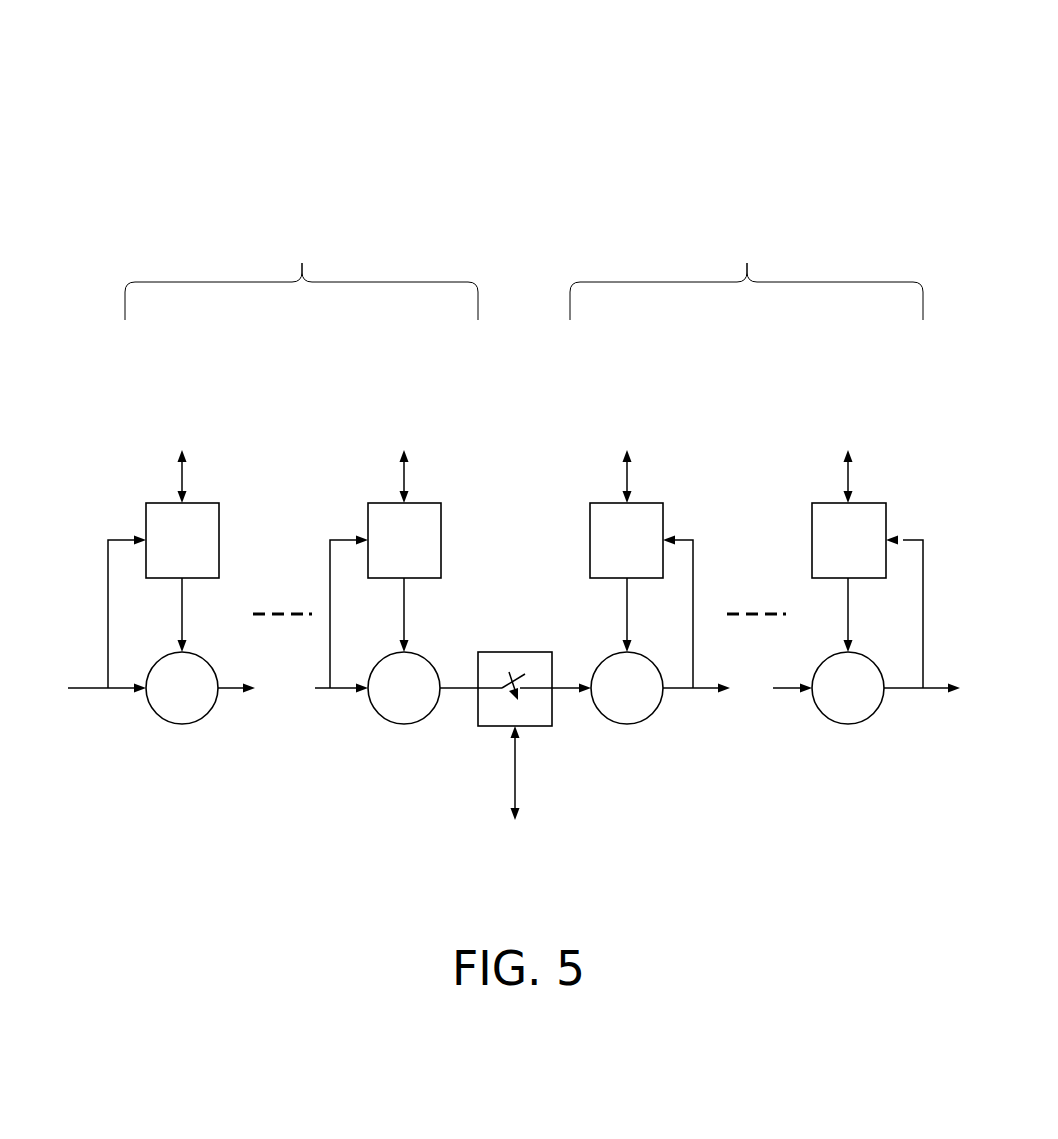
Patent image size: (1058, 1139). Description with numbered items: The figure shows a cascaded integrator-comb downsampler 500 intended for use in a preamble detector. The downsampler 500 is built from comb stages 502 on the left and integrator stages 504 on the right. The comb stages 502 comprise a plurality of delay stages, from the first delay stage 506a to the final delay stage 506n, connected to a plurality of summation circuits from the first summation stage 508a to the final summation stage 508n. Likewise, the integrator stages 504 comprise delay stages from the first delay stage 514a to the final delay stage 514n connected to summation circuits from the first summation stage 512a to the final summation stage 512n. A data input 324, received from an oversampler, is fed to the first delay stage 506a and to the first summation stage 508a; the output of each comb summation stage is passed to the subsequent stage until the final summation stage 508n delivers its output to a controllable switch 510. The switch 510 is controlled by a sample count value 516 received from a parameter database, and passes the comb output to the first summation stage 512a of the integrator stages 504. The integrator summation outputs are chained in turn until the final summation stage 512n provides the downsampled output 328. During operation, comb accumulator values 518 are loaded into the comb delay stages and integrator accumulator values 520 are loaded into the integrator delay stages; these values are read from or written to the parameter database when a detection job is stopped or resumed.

The cascaded integrator-comb downsampler 500 is at (218, 96).
The comb stages 502 is at (288, 274).
The integrator stages 504 is at (720, 274).
The first Z^-1 stage 506a is at (137, 531).
The final Z^-1 stage 506n is at (359, 531).
The first summation stage 508a is at (210, 711).
The final summation stage 508n is at (380, 710).
The controllable switch 510 is at (518, 660).
The first summation stage 512a is at (663, 707).
The final summation stage 512n is at (820, 706).
The first Z^-1 stage 514a is at (581, 531).
The final Z^-1 stage 514n is at (804, 531).
The sample count value 516 is at (528, 792).
The comb accumulator values 518 is at (110, 356).
The integrator accumulator values 520 is at (577, 356).
The data input 324 is at (104, 729).
The downsampled output 328 is at (916, 733).